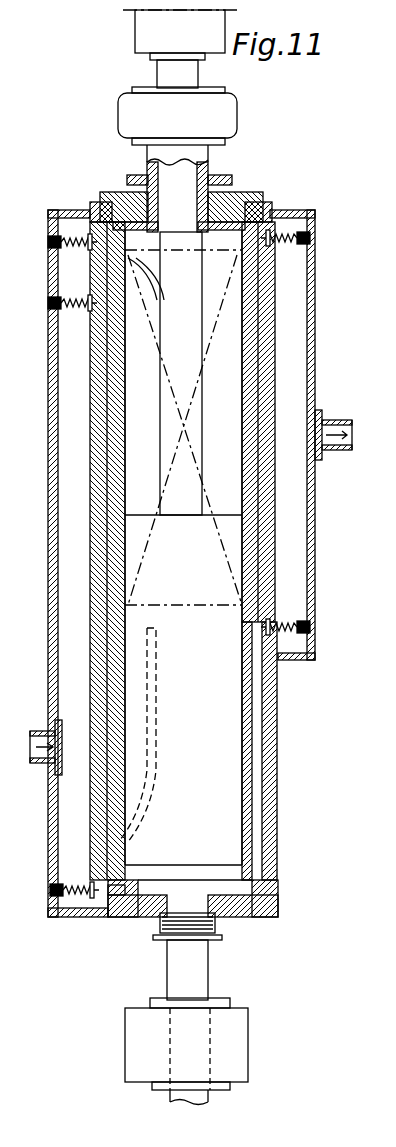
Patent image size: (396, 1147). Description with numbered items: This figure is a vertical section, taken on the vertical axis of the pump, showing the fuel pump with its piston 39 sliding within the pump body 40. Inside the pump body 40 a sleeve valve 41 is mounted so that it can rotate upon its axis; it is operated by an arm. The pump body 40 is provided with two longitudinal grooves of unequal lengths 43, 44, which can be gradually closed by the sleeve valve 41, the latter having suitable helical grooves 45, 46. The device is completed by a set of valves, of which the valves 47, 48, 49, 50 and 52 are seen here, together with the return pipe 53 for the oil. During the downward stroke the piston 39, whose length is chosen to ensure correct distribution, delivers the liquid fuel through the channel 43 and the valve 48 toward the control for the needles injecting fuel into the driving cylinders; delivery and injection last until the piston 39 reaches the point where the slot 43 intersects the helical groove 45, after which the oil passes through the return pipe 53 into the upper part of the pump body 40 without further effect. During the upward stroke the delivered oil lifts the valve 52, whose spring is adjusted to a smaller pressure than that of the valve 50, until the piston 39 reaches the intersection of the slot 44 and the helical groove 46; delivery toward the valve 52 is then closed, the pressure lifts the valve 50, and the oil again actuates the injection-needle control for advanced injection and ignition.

The piston 39 is at (183, 735).
The pump body 40 is at (269, 565).
The sleeve valve 41 is at (243, 355).
The longitudinal groove 43 is at (256, 752).
The longitudinal groove 44 is at (108, 276).
The helical groove 45 is at (157, 779).
The helical groove 46 is at (148, 283).
The valve 47 is at (100, 884).
The valve 48 is at (266, 630).
The valve 49 is at (92, 242).
The valve 50 is at (276, 246).
The valve 52 is at (88, 312).
The return pipe 53 is at (35, 731).